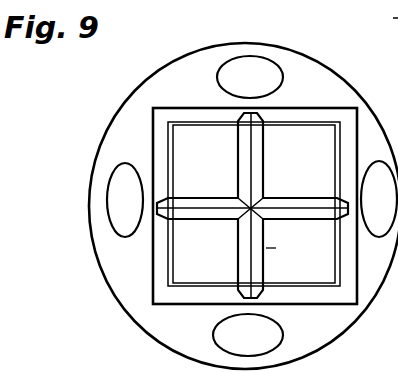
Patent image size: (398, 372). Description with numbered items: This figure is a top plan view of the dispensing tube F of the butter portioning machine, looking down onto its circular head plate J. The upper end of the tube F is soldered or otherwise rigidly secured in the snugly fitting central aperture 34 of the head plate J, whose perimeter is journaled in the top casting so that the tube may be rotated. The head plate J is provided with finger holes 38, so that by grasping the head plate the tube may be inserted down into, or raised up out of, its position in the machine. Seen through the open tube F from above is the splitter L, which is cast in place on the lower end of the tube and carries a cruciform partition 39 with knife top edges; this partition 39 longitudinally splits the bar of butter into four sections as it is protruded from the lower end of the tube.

The central aperture 34 is at (153, 136).
The finger holes 38 is at (305, 206).
The cruciform partition 39 is at (257, 202).
The dispensing tube F is at (347, 150).
The head plate J is at (125, 213).
The splitter L is at (279, 247).